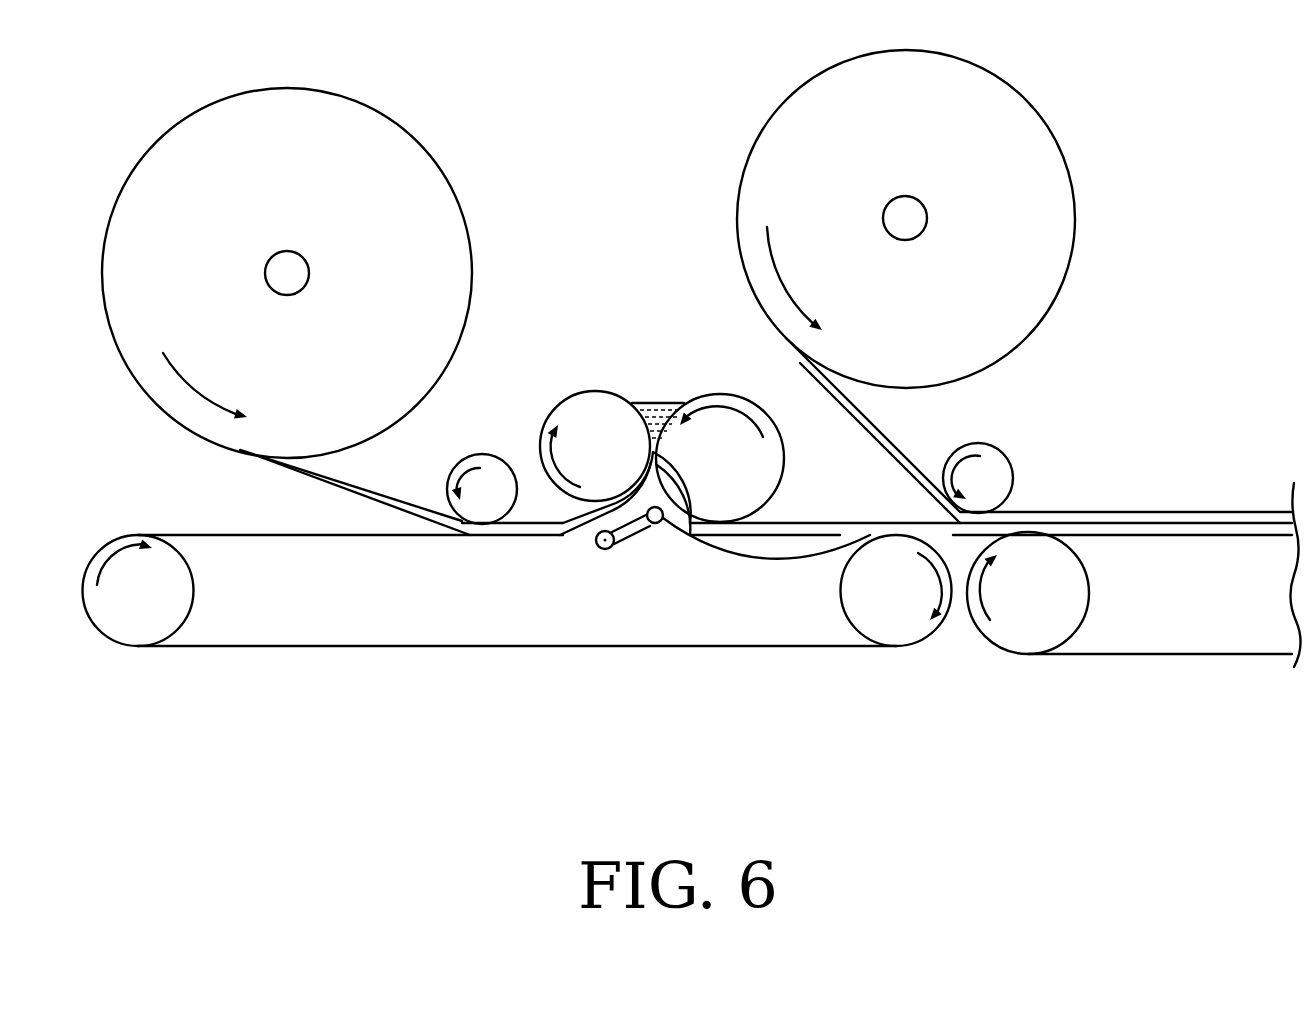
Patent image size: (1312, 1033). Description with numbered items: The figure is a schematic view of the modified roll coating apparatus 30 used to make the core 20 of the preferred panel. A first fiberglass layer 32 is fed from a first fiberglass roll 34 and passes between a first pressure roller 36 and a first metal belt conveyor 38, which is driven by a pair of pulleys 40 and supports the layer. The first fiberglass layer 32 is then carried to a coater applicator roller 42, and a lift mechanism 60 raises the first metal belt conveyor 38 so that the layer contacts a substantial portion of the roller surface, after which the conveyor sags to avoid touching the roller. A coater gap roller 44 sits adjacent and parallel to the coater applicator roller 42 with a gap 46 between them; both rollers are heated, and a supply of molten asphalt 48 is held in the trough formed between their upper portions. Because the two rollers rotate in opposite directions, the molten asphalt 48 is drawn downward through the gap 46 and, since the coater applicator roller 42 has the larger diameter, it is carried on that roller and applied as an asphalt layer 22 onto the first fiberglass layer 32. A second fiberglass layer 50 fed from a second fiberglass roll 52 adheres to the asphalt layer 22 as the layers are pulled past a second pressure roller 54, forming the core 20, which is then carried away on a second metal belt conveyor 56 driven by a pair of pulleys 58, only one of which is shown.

The core 20 is at (1132, 508).
The asphalt layer 22 is at (812, 523).
The modified roll coating apparatus 30 is at (575, 340).
The first fiberglass layer 32 is at (382, 490).
The first fiberglass roll 34 is at (280, 200).
The first pressure roller 36 is at (492, 480).
The first metal belt conveyor 38 is at (343, 538).
The pulleys 40 is at (112, 613).
The coater applicator roller 42 is at (697, 480).
The coater gap roller 44 is at (574, 460).
The gap 46 is at (570, 527).
The molten asphalt 48 is at (653, 403).
The second fiberglass layer 50 is at (895, 442).
The second fiberglass roll 52 is at (879, 152).
The second pressure roller 54 is at (993, 470).
The second metal belt conveyor 56 is at (1142, 655).
The pulleys 58 is at (1012, 612).
The lift mechanism 60 is at (647, 552).